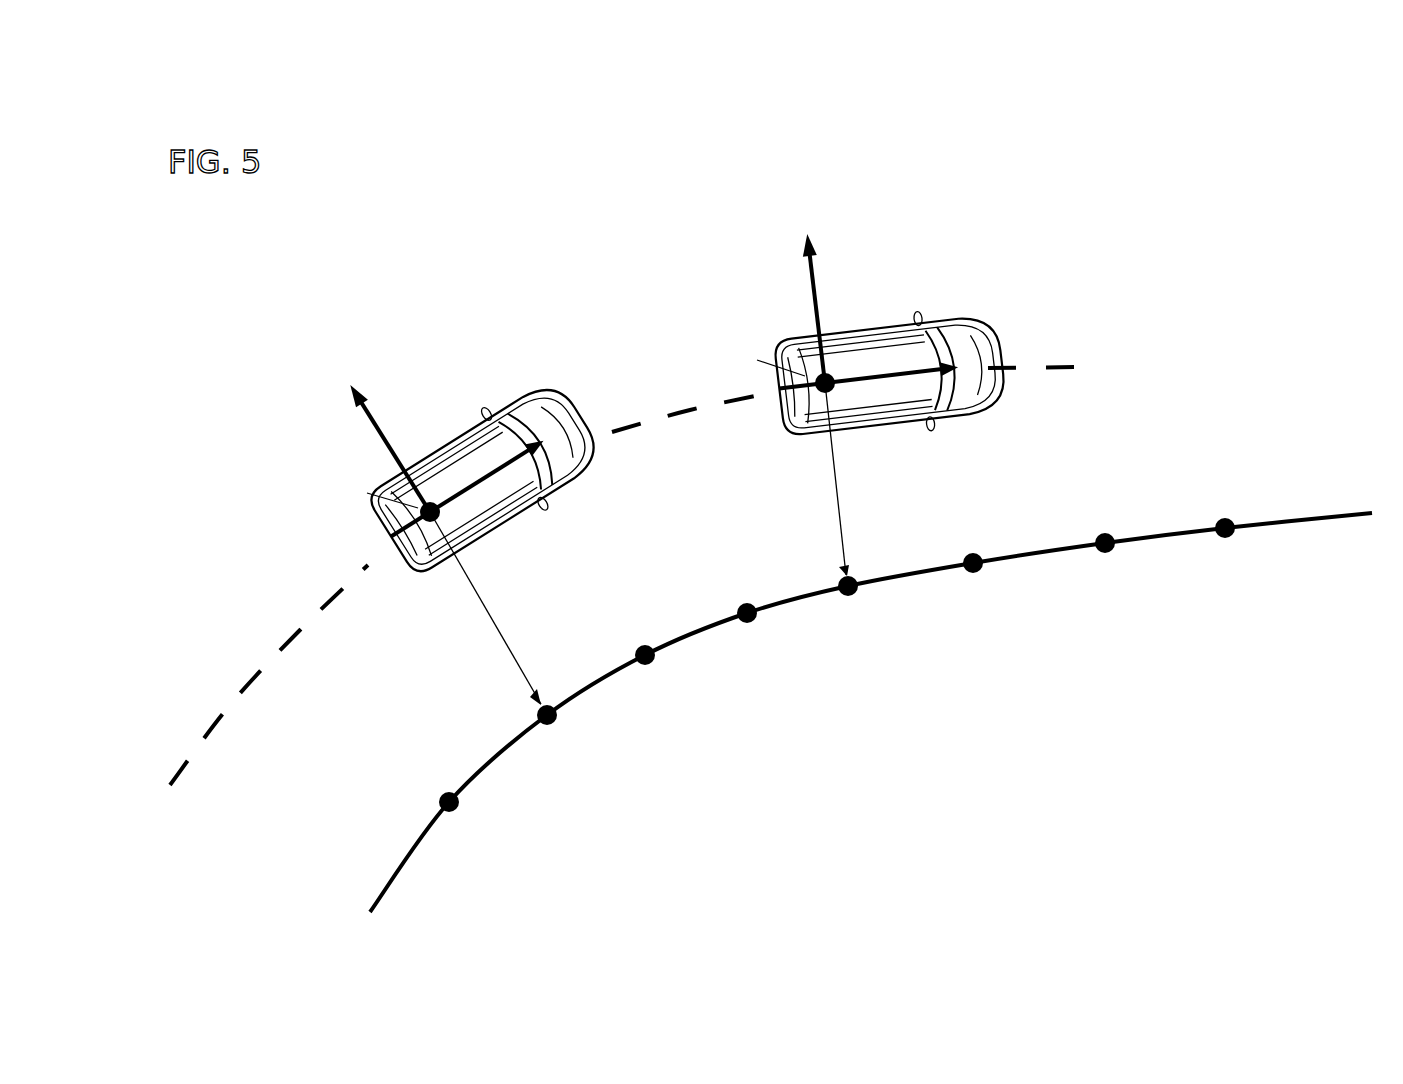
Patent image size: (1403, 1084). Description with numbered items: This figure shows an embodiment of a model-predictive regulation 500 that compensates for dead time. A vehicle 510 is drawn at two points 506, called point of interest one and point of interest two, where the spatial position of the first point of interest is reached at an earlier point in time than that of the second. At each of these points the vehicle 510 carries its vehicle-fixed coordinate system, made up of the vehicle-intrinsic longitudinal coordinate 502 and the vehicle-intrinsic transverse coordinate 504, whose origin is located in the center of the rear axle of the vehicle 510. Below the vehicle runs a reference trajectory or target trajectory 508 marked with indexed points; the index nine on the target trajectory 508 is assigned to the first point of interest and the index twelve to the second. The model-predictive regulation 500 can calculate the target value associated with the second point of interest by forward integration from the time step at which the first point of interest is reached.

The model-predictive regulation 500 is at (208, 229).
The vehicle-intrinsic longitudinal coordinate 502 is at (607, 436).
The vehicle-intrinsic transverse coordinate 504 is at (382, 360).
The points 506 is at (285, 497).
The reference trajectory or target trajectory 508 is at (457, 813).
The vehicle 510 is at (523, 397).